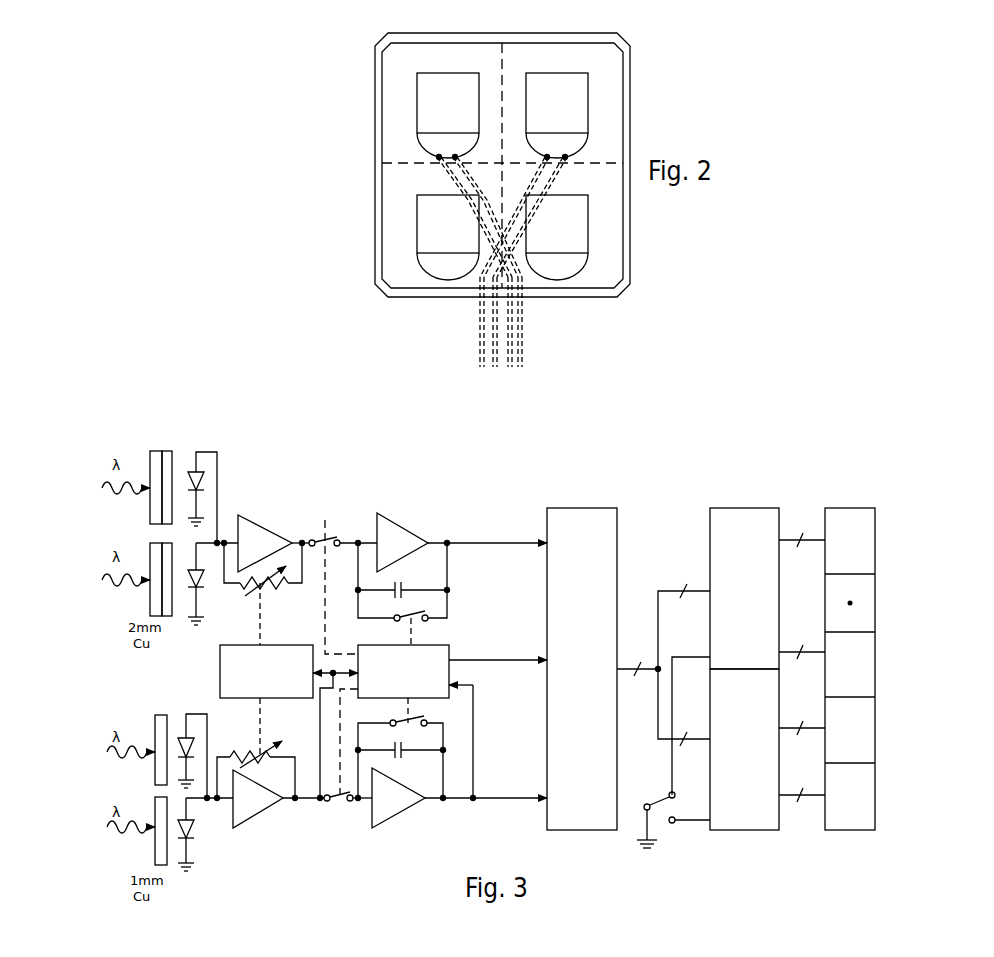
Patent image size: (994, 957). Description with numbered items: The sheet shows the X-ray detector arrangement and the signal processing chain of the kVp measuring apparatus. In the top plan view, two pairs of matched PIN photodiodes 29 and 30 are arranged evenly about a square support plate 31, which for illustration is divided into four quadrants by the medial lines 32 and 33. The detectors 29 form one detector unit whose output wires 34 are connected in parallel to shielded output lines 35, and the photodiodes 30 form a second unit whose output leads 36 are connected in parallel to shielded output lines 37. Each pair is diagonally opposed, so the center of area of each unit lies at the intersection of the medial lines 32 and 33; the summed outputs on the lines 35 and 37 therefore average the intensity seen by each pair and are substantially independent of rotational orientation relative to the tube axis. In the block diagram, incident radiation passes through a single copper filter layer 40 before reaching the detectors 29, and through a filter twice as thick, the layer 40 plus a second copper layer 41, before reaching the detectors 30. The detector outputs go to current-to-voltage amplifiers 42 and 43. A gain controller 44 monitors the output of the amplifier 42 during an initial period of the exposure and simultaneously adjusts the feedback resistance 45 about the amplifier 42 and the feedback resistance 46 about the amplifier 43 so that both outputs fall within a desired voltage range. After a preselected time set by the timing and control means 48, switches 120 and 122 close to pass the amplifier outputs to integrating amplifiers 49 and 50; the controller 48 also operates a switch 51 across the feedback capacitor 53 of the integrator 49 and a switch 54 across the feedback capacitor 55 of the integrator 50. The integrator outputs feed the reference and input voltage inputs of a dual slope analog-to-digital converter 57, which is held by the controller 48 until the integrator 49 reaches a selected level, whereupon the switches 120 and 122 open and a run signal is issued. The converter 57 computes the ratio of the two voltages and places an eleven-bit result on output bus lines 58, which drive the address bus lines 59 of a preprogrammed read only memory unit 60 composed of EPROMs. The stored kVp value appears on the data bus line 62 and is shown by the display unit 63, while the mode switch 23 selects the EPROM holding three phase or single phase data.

In FIG. 3, the mode switch 23 is at (663, 800).
In FIG. 2, the photodiodes 29 is at (435, 78).
In FIG. 3, the photodiodes 29 is at (182, 736).
In FIG. 2, the photodiodes 30 is at (557, 78).
In FIG. 3, the photodiodes 30 is at (198, 470).
In FIG. 2, the square support plate 31 is at (619, 100).
In FIG. 2, the medial line 32 is at (503, 62).
In FIG. 2, the medial line 33 is at (405, 167).
In FIG. 2, the output wires 34 is at (468, 150).
In FIG. 2, the shielded output lines 35 is at (512, 326).
In FIG. 2, the output leads 36 is at (577, 150).
In FIG. 2, the shielded output lines 37 is at (493, 326).
In FIG. 3, the copper filter layer 40 is at (168, 450).
In FIG. 3, the second copper layer 41 is at (155, 452).
In FIG. 3, the current-to-voltage amplifier 42 is at (263, 812).
In FIG. 3, the current-to-voltage amplifier 43 is at (262, 522).
In FIG. 3, the gain controller 44 is at (285, 699).
In FIG. 3, the feedback resistance 45 is at (244, 751).
In FIG. 3, the feedback resistance 46 is at (282, 583).
In FIG. 3, the timing and control means 48 is at (445, 643).
In FIG. 3, the integrating amplifier 49 is at (405, 812).
In FIG. 3, the integrating amplifier 50 is at (403, 523).
In FIG. 3, the switch 51 is at (395, 720).
In FIG. 3, the feedback capacitor 53 is at (402, 752).
In FIG. 3, the switch 54 is at (396, 616).
In FIG. 3, the feedback capacitor 55 is at (402, 584).
In FIG. 3, the dual slope analog-to-digital converter 57 is at (580, 507).
In FIG. 3, the output bus lines 58 is at (648, 674).
In FIG. 3, the address bus lines 59 is at (664, 590).
In FIG. 3, the read only memory unit 60 is at (735, 507).
In FIG. 3, the data bus line 62 is at (787, 538).
In FIG. 3, the display unit 63 is at (846, 831).
In FIG. 3, the switch 120 is at (349, 806).
In FIG. 3, the switch 122 is at (334, 533).